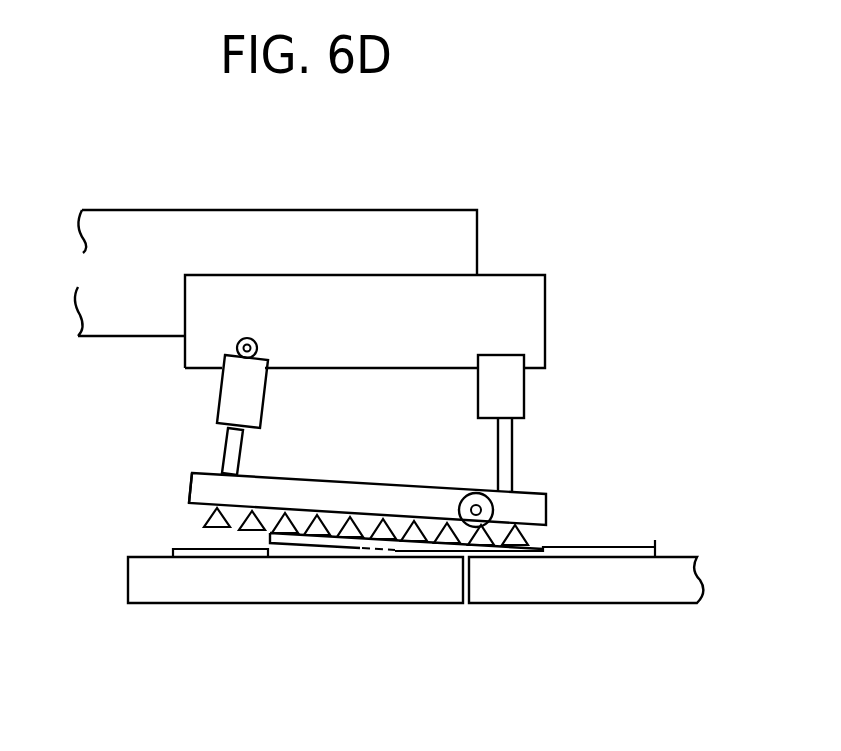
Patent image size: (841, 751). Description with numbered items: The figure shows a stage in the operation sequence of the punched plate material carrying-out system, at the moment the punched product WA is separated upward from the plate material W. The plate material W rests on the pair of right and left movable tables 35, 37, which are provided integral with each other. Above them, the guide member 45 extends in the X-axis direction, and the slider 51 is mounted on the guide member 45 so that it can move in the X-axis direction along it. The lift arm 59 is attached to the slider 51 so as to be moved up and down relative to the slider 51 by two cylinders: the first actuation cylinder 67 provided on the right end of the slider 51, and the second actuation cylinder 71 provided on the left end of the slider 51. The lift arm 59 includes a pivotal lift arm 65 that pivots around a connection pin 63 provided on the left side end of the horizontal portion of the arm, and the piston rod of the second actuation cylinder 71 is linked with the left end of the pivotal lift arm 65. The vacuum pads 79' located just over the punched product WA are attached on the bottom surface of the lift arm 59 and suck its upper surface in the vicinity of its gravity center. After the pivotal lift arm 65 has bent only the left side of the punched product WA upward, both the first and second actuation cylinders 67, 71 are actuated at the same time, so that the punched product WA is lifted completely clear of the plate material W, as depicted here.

The guide member 45 is at (350, 210).
The slider 51 is at (305, 275).
The second actuation cylinder 71 is at (219, 396).
The first actuation cylinder 67 is at (525, 392).
The lift arm 59 is at (356, 479).
The pivotal lift arm 65 is at (191, 485).
The connection pin 63 is at (534, 492).
The vacuum pads located over the punched product 79' is at (366, 587).
The punched product WA is at (400, 557).
The plate material W is at (182, 539).
The movable table 35 is at (230, 604).
The movable table 37 is at (638, 603).